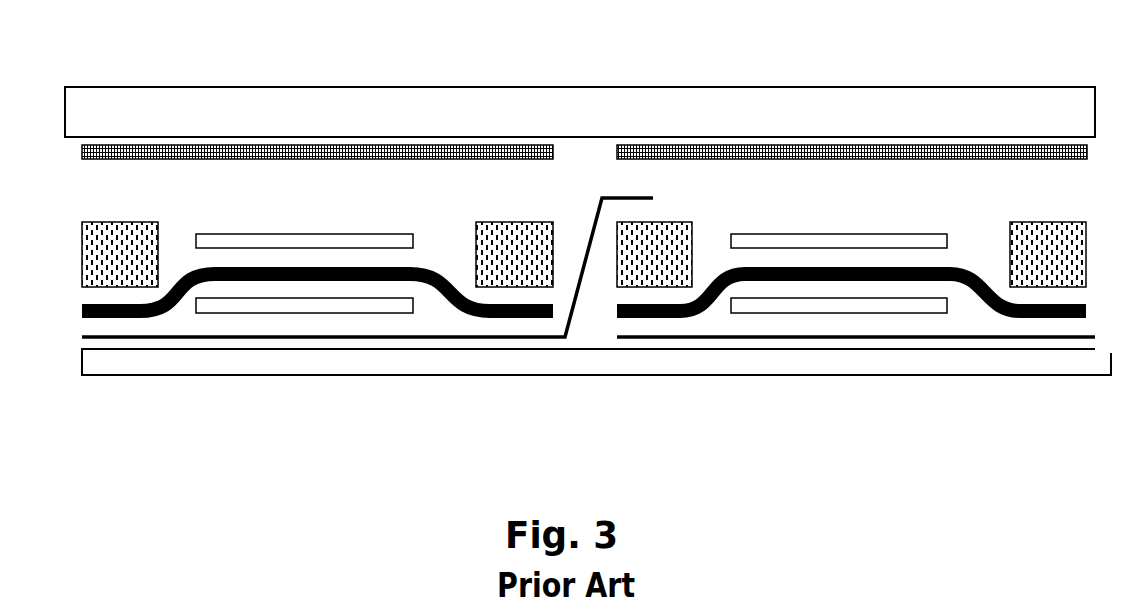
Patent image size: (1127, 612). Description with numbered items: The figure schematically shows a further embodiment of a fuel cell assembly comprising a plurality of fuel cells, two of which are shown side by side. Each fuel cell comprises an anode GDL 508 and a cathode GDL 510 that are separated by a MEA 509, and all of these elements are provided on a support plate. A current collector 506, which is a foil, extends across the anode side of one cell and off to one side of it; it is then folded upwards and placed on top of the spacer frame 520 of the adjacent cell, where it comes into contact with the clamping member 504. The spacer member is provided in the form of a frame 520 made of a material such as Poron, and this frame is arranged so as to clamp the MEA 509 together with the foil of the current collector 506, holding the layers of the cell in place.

The clamping member 504 is at (127, 133).
The spacer frame 520 is at (499, 210).
The cathode GDL 510 is at (799, 221).
The anode GDL 508 is at (850, 325).
The MEA 509 is at (974, 257).
The current collector 506 is at (485, 350).